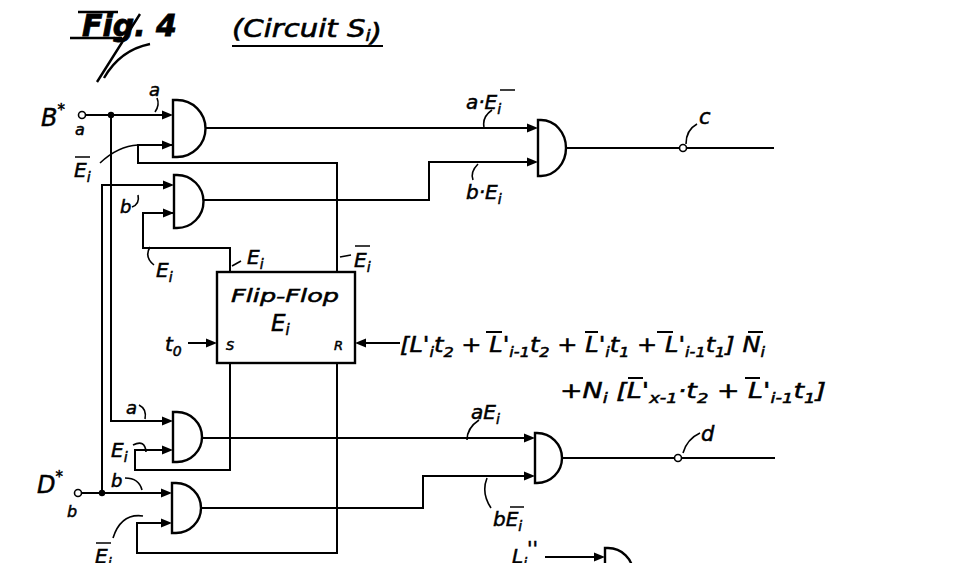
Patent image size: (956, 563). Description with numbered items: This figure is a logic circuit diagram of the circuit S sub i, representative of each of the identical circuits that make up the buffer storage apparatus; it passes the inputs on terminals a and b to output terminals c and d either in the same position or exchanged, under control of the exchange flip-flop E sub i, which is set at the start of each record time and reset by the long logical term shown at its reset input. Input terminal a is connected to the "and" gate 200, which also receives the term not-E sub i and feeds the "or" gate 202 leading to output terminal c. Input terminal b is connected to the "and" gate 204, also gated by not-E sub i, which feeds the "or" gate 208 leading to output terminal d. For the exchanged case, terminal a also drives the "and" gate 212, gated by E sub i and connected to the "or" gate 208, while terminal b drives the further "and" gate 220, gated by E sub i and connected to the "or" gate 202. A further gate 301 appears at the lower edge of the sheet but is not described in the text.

The "and" gate 200 is at (196, 110).
The "and" gate 220 is at (199, 212).
The "and" gate 212 is at (212, 388).
The "and" gate 204 is at (189, 512).
The "or" gate 202 is at (558, 138).
The "or" gate 208 is at (553, 463).
The gate 301 is at (620, 562).